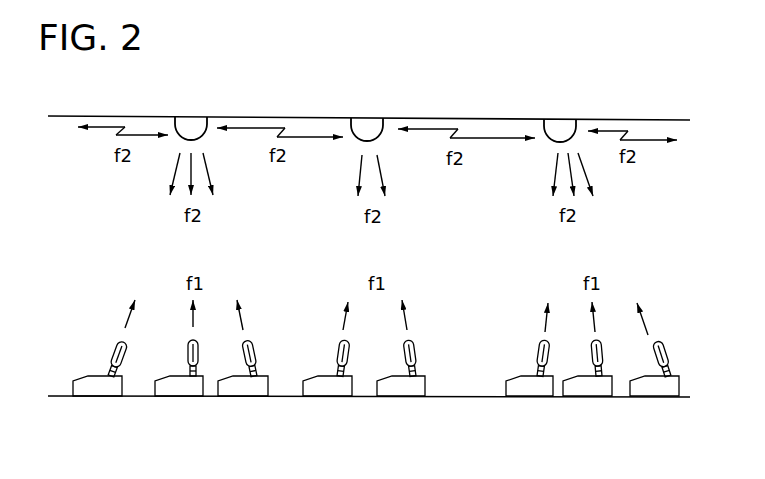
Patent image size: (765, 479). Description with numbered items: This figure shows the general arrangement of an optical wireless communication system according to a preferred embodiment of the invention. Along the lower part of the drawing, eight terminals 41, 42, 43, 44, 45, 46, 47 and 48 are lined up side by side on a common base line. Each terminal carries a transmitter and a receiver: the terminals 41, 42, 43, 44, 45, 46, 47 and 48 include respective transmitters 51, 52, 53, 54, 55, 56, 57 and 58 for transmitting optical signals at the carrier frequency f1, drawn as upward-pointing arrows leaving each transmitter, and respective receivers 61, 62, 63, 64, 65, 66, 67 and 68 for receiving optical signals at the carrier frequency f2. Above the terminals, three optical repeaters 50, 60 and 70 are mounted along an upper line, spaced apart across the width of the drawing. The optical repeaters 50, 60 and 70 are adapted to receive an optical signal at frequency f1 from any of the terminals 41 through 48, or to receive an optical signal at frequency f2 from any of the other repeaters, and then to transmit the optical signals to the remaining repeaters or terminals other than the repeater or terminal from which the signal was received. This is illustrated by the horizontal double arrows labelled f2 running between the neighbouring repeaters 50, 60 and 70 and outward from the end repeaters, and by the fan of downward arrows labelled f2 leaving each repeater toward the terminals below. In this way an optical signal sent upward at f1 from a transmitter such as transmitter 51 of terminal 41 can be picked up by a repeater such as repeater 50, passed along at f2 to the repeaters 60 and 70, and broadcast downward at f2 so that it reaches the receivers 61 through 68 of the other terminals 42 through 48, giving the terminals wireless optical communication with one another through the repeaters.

The terminal 41 is at (90, 398).
The terminal 42 is at (185, 398).
The terminal 43 is at (245, 398).
The terminal 44 is at (325, 398).
The terminal 45 is at (400, 398).
The terminal 46 is at (523, 398).
The terminal 47 is at (593, 398).
The terminal 48 is at (657, 398).
The transmitter 51 is at (116, 339).
The transmitter 52 is at (193, 338).
The transmitter 53 is at (252, 338).
The transmitter 54 is at (343, 339).
The transmitter 55 is at (410, 338).
The transmitter 56 is at (542, 340).
The transmitter 57 is at (600, 339).
The transmitter 58 is at (656, 340).
The receiver 61 is at (125, 355).
The receiver 62 is at (199, 355).
The receiver 63 is at (259, 355).
The receiver 64 is at (349, 355).
The receiver 65 is at (417, 355).
The receiver 66 is at (549, 355).
The receiver 67 is at (604, 355).
The receiver 68 is at (664, 355).
The optical repeater 50 is at (192, 123).
The optical repeater 60 is at (371, 124).
The optical repeater 70 is at (563, 125).